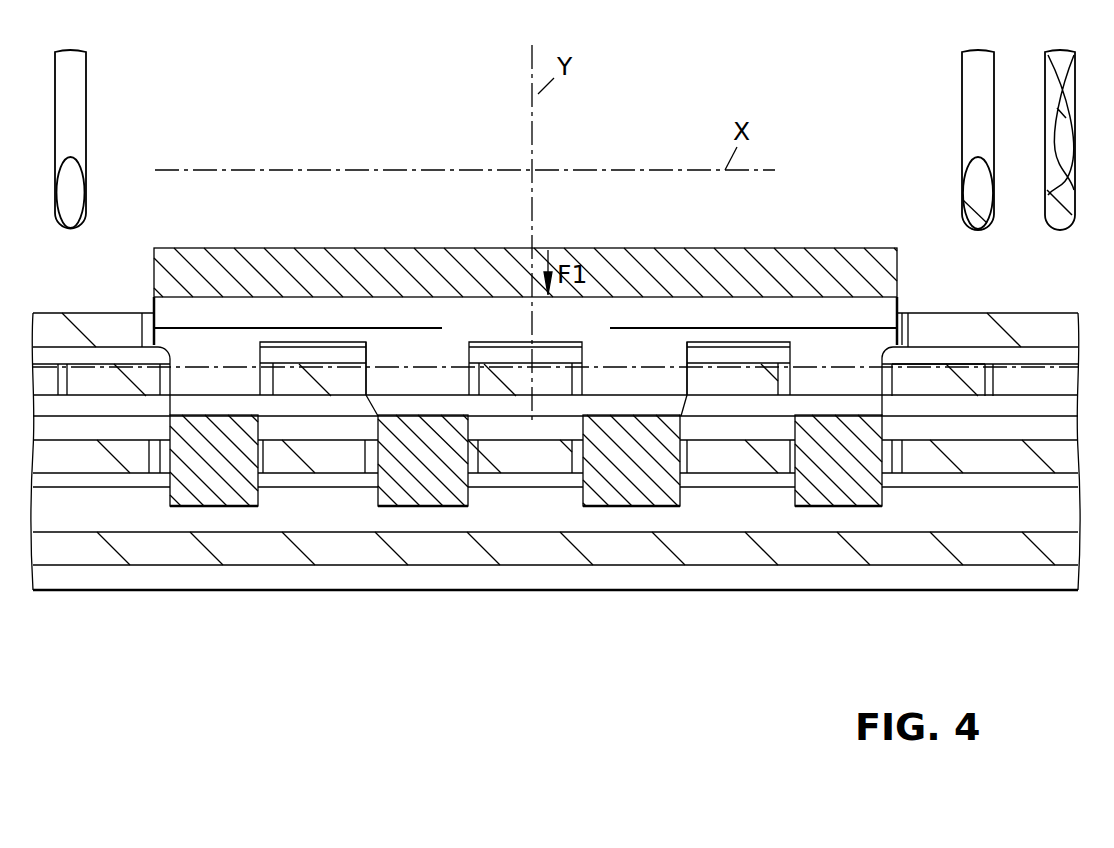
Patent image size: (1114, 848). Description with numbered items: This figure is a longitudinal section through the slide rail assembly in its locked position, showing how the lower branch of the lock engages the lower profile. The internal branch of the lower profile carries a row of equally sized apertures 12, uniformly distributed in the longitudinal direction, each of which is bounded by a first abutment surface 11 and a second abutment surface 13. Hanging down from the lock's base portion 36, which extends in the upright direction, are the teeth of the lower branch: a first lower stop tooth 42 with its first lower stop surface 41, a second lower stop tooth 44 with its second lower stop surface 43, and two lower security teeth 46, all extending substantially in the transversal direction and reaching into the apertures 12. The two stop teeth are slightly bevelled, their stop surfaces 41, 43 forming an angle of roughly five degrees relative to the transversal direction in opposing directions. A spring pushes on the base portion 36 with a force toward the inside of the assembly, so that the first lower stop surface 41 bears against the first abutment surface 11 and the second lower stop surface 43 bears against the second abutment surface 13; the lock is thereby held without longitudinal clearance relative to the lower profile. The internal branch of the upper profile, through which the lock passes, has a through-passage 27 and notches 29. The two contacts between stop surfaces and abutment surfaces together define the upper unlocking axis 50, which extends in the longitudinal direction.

The first abutment surface 11 is at (685, 387).
The apertures 12 is at (267, 378).
The second abutment surface 13 is at (368, 388).
The through-passage 27 is at (905, 323).
The notches 29 is at (157, 465).
The base portion 36 is at (172, 276).
The first lower stop surface 41 is at (685, 387).
The first lower stop tooth 42 is at (627, 487).
The second lower stop surface 43 is at (365, 387).
The second lower stop tooth 44 is at (420, 487).
The lower security teeth 46 is at (210, 487).
The upper unlocking axis 50 is at (932, 370).